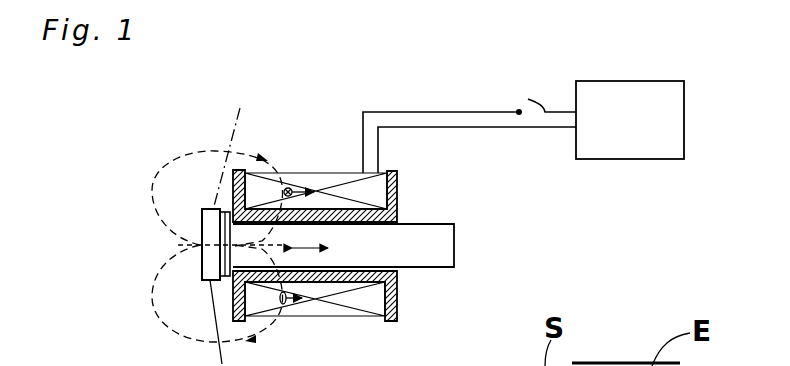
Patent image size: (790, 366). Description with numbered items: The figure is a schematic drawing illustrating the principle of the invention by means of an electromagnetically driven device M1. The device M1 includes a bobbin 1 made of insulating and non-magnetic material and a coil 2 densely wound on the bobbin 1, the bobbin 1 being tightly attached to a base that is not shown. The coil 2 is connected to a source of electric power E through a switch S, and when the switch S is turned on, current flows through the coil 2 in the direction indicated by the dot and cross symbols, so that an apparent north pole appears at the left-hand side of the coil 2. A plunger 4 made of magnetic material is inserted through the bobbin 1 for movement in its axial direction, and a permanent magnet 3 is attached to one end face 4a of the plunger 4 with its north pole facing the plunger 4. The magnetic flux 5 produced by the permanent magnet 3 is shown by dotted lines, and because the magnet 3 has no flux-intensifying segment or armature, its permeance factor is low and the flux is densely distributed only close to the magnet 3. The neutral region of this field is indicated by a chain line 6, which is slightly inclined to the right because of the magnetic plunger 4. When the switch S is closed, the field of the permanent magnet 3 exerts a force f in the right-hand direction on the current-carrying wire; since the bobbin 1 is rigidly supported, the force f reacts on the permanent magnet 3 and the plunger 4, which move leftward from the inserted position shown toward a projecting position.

The bobbin 1 is at (397, 190).
The coil 2 is at (341, 176).
The permanent magnet 3 is at (200, 272).
The plunger 4 is at (415, 247).
The end face of the plunger 4a is at (204, 212).
The magnetic flux lines 5 is at (160, 258).
The chain line 6 is at (217, 348).
The electromagnetically driven device M1 is at (404, 214).
The force f is at (319, 189).
The switch S is at (529, 99).
The source of electric power E is at (655, 80).